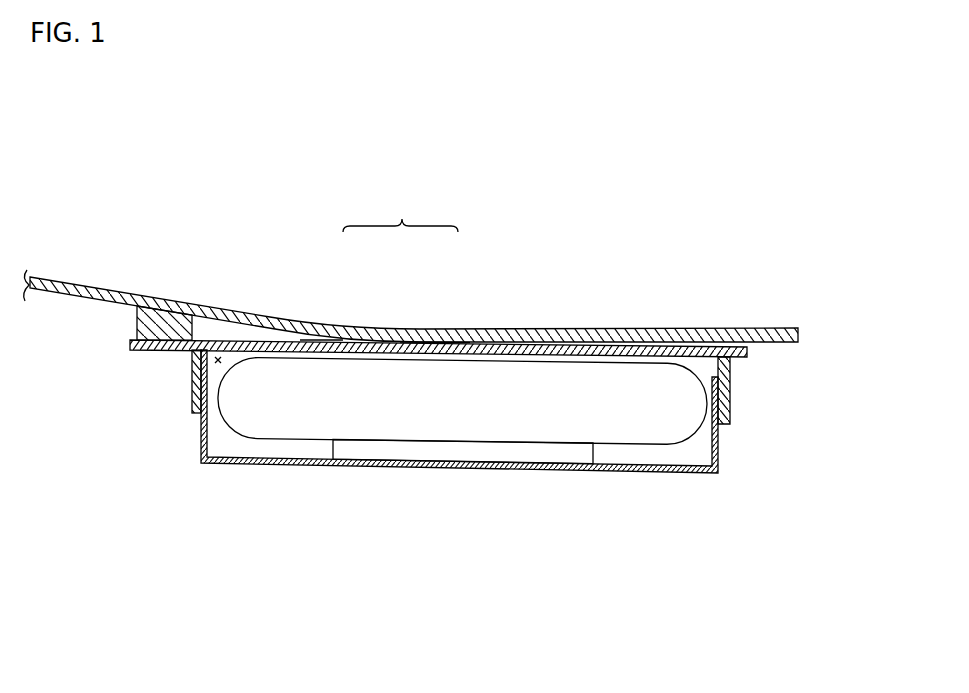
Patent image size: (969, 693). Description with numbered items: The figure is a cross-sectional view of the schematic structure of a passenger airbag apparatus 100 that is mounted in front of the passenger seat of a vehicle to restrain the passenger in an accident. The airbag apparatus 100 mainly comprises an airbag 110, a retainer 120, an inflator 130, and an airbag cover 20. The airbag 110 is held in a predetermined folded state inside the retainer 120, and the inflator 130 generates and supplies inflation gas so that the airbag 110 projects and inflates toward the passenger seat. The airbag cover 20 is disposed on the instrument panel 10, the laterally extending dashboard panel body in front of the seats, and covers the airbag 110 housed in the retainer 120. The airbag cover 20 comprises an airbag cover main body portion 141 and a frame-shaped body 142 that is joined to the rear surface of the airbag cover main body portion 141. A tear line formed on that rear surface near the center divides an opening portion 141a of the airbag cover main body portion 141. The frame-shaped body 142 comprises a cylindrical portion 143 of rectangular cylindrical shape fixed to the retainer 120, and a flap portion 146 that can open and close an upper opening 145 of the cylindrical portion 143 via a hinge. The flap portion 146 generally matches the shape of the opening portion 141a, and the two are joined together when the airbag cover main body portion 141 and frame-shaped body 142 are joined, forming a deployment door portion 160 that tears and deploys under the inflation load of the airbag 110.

The instrument panel 10 is at (68, 282).
The airbag cover 20 is at (411, 272).
The airbag apparatus 100 is at (478, 396).
The airbag 110 is at (667, 446).
The retainer 120 is at (720, 450).
The inflator 130 is at (398, 448).
The airbag cover main body portion 141 is at (522, 328).
The opening portion 141a is at (431, 335).
The frame-shaped body 142 is at (729, 412).
The cylindrical portion 143 is at (190, 402).
The upper opening 145 is at (211, 353).
The flap portion 146 is at (343, 343).
The deployment door portion 160 is at (400, 211).